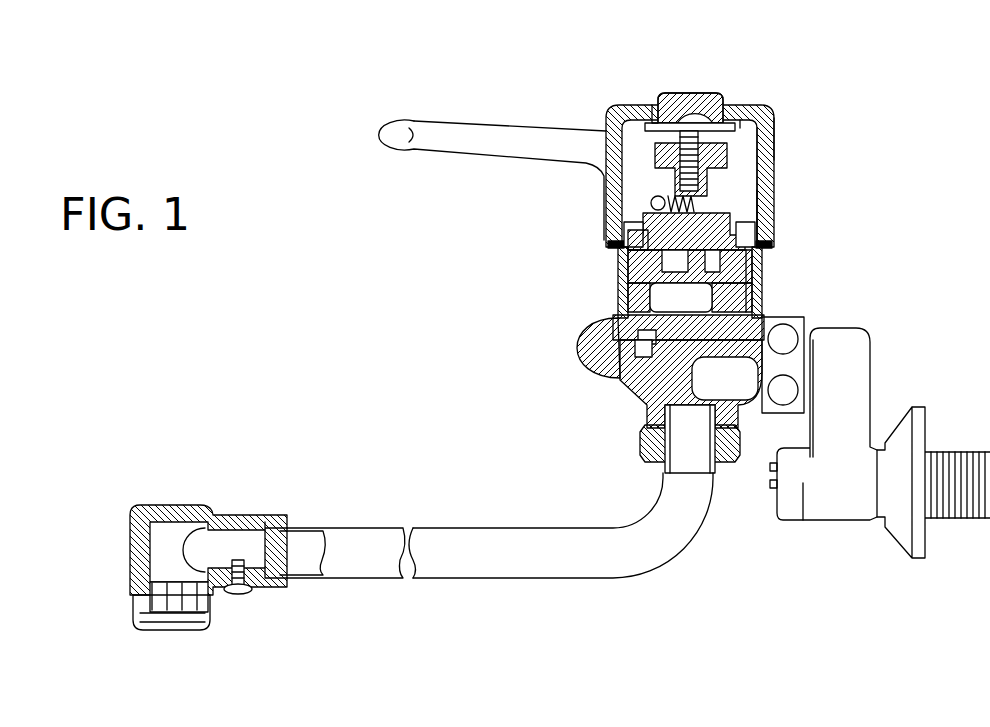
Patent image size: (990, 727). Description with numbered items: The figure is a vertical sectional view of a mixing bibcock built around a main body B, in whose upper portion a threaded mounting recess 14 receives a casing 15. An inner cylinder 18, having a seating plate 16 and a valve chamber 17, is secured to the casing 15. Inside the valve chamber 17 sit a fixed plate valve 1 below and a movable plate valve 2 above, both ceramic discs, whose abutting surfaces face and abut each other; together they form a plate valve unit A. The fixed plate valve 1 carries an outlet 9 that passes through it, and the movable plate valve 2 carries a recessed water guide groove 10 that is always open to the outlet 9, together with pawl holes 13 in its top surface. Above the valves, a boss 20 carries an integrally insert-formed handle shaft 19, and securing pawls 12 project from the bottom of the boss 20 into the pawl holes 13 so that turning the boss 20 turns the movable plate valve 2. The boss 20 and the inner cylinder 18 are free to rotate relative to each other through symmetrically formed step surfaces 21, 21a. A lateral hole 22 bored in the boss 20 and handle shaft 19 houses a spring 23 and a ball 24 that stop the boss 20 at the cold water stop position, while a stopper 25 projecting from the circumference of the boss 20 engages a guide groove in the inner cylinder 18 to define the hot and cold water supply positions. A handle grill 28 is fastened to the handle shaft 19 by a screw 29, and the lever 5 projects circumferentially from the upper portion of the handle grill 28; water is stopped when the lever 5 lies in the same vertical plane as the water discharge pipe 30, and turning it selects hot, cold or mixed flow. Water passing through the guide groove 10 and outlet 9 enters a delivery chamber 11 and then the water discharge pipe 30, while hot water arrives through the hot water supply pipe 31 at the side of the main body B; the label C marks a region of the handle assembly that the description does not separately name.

The fixed plate valve 1 is at (775, 318).
The movable plate valve 2 is at (770, 300).
The lever 5 is at (477, 120).
The outlet 9 is at (648, 372).
The recessed water guide groove 10 is at (660, 300).
The delivery chamber 11 is at (727, 387).
The securing pawls 12 is at (764, 275).
The pawl holes 13 is at (765, 302).
The threaded mounting recess 14 is at (625, 318).
The casing 15 is at (762, 252).
The seating plate 16 is at (645, 337).
The valve chamber 17 is at (645, 290).
The inner cylinder 18 is at (640, 265).
The handle shaft 19 is at (745, 130).
The boss 20 is at (776, 158).
The step surface 21 is at (557, 130).
The step surface 21a is at (765, 195).
The lateral hole 22 is at (652, 103).
The spring 23 is at (650, 150).
The ball 24 is at (660, 170).
The stopper 25 is at (650, 237).
The handle grill 28 is at (736, 118).
The screw 29 is at (698, 100).
The water discharge pipe 30 is at (500, 530).
The hot water supply pipe 31 is at (848, 395).
The plate valve unit A is at (770, 283).
The main body B is at (568, 333).
The adjusting mechanism C is at (778, 143).